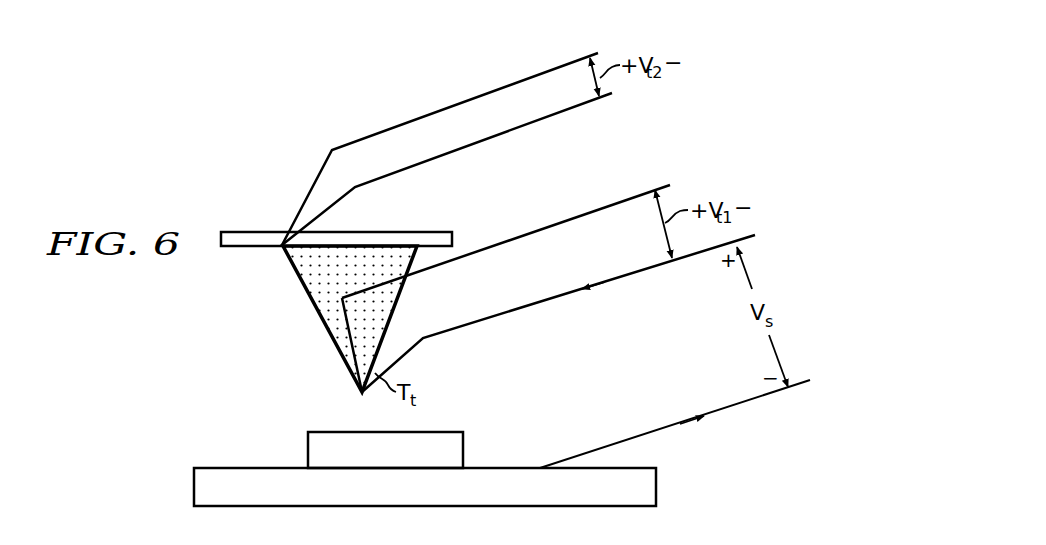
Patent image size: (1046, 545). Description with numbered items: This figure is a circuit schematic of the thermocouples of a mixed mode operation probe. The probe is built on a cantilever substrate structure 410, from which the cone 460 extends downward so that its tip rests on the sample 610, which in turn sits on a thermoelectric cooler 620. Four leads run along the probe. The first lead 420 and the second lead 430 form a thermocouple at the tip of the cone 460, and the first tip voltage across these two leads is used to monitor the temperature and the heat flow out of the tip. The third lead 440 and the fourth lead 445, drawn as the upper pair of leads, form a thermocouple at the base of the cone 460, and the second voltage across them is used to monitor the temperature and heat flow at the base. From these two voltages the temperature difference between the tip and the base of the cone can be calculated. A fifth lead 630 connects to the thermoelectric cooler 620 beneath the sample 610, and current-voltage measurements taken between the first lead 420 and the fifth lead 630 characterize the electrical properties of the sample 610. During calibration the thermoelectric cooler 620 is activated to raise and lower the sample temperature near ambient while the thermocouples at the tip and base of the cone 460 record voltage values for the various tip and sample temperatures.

The cantilever substrate structure 410 is at (243, 232).
The first lead 420 is at (513, 311).
The second lead 430 is at (585, 213).
The third lead 440 is at (490, 92).
The fourth lead 445 is at (453, 152).
The cone 460 is at (304, 283).
The sample 610 is at (308, 449).
The thermoelectric cooler 620 is at (657, 485).
The fifth lead 630 is at (657, 356).